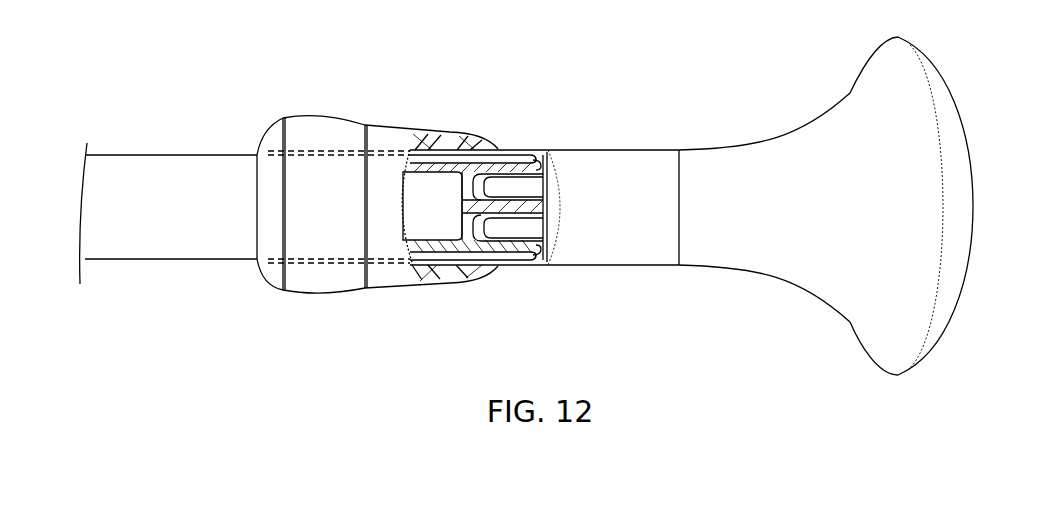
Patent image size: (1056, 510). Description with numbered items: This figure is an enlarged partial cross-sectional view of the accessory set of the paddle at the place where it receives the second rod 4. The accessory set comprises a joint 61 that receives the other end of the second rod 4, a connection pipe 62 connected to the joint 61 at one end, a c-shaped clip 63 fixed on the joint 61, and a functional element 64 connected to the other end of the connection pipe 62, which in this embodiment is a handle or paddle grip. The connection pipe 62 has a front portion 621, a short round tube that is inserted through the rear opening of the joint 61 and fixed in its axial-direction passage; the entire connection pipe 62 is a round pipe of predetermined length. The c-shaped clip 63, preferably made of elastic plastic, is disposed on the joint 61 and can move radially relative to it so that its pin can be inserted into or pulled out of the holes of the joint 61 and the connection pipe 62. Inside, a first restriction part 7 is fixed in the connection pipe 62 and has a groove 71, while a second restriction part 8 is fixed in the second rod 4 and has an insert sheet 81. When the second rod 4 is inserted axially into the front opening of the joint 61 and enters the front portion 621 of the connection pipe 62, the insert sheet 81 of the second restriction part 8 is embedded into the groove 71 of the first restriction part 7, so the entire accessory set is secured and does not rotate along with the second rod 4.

The second rod 4 is at (155, 172).
The joint 61 is at (393, 135).
The connection pipe 62 is at (593, 150).
The front portion 621 is at (455, 150).
The c-shaped clip 63 is at (315, 128).
The functional element 64 is at (962, 162).
The first restriction part 7 is at (553, 195).
The groove 71 is at (548, 215).
The second restriction part 8 is at (428, 247).
The insert sheet 81 is at (500, 217).